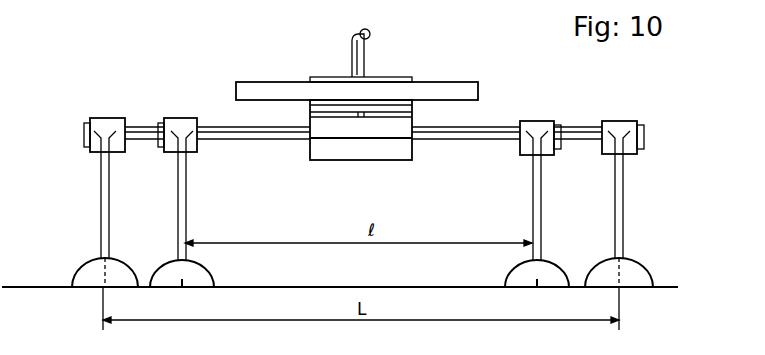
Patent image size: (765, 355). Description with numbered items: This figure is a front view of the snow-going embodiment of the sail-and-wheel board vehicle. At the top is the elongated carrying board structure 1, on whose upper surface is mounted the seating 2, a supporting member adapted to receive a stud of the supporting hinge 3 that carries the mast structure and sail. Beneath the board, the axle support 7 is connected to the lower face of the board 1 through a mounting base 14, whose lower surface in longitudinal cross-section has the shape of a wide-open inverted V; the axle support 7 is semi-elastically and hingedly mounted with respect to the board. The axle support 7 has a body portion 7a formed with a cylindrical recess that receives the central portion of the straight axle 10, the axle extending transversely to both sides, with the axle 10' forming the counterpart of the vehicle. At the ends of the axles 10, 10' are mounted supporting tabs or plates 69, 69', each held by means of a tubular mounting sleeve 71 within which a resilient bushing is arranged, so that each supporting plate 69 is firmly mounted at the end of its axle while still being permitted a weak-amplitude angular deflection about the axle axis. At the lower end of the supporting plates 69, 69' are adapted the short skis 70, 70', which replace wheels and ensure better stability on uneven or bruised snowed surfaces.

The carrying board structure 1 is at (260, 80).
The seating 2 is at (409, 78).
The supporting hinge 3 is at (364, 53).
The axle support 7 is at (309, 165).
The body portion 7a is at (352, 135).
The straight axle 10 is at (358, 163).
The axle 10' is at (364, 110).
The mounting base 14 is at (310, 105).
The supporting plate 69 is at (374, 195).
The supporting plate 69' is at (381, 194).
The short ski 70 is at (366, 263).
The short ski 70' is at (369, 253).
The tubular mounting sleeve 71 is at (183, 130).